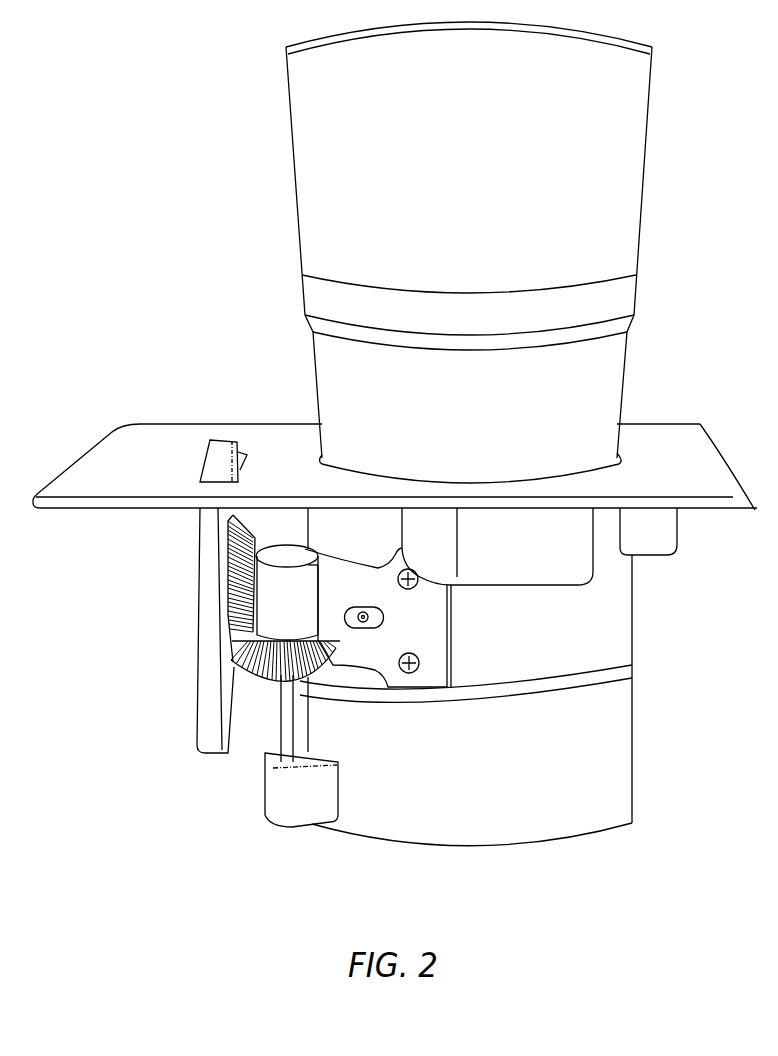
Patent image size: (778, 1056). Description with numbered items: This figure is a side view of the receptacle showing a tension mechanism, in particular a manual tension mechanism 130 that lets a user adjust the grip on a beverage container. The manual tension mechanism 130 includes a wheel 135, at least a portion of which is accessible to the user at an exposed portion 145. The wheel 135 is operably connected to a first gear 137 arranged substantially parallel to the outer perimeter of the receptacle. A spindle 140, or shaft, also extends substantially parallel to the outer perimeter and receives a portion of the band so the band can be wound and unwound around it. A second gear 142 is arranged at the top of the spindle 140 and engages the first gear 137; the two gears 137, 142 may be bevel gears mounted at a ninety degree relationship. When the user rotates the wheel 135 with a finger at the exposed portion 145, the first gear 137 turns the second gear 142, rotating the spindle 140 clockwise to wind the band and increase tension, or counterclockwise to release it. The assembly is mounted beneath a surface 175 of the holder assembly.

The manual tension mechanism 130 is at (153, 357).
The surface 175 is at (113, 473).
The exposed portion 145 is at (222, 452).
The wheel 135 is at (212, 572).
The first gear 137 is at (228, 630).
The second gear 142 is at (302, 650).
The spindle 140 is at (286, 733).